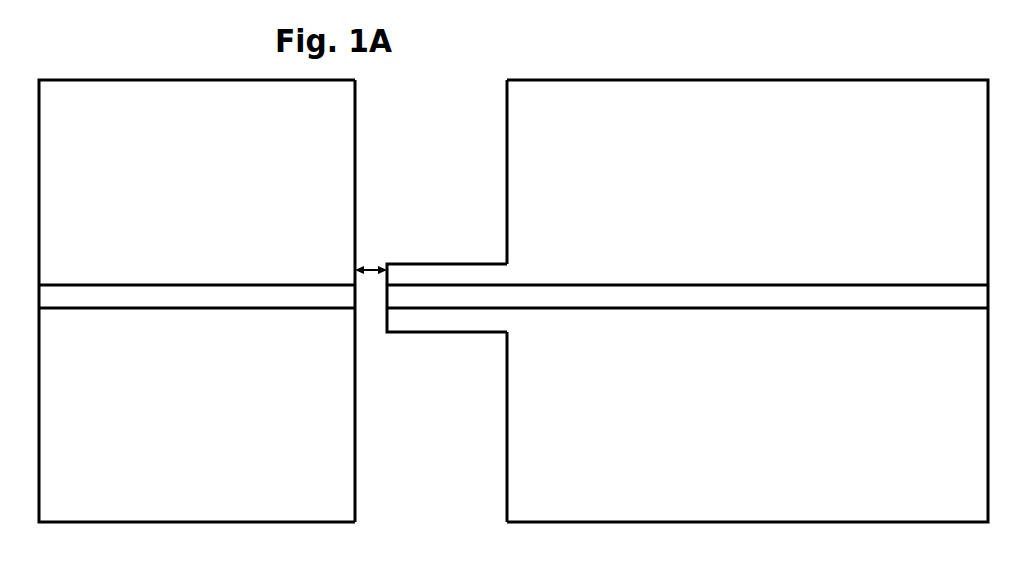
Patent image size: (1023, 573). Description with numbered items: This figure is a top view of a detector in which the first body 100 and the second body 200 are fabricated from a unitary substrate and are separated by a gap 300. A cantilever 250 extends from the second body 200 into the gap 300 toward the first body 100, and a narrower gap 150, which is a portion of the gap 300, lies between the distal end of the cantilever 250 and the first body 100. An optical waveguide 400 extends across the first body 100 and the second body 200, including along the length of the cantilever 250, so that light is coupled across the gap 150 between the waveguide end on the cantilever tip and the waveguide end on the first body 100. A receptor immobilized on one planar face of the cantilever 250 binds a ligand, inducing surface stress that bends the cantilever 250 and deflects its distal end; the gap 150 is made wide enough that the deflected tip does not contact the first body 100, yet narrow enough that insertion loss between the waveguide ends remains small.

The first body 100 is at (172, 398).
The second body 200 is at (754, 398).
The gap 300 is at (499, 449).
The gap between distal end of cantilever and first body 150 is at (413, 243).
The cantilever 250 is at (478, 318).
The optical waveguide 400 is at (168, 297).